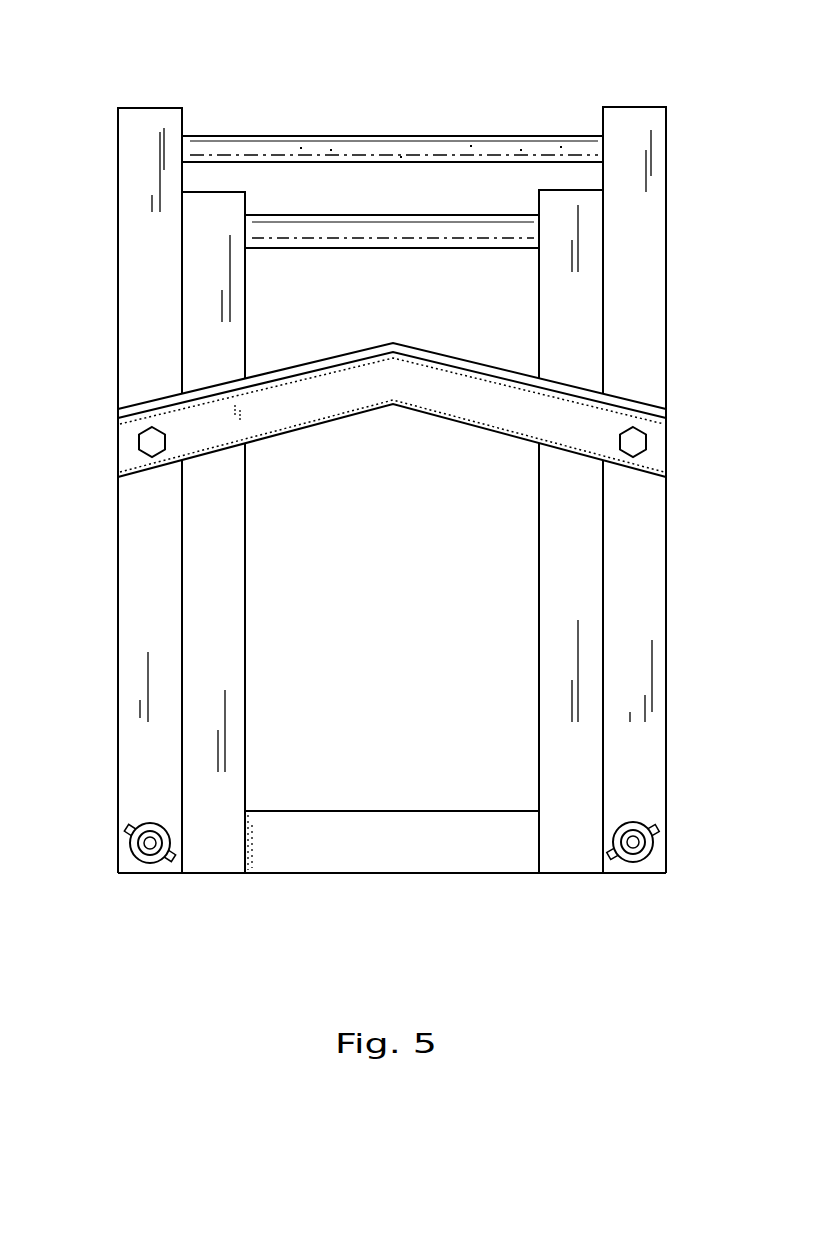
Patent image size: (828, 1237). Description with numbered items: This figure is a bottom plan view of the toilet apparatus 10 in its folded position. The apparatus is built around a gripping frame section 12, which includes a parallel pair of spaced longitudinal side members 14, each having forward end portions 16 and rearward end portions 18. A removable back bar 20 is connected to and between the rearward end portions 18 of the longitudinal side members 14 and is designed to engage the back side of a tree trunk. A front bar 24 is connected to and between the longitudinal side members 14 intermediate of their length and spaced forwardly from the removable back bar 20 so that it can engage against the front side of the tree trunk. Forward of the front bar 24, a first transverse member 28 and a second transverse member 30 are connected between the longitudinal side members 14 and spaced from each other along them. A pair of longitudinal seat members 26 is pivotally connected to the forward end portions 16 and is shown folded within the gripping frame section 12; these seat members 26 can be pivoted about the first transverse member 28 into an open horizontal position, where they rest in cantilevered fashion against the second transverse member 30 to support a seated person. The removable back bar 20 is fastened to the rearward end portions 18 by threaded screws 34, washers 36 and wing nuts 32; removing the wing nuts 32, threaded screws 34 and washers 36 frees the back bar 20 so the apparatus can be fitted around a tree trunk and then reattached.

The toilet apparatus 10 is at (566, 84).
The gripping frame section 12 is at (668, 128).
The longitudinal side members 14 is at (147, 248).
The forward end portions 16 is at (160, 108).
The rearward end portions 18 is at (157, 867).
The removable back bar 20 is at (412, 853).
The front bar 24 is at (318, 400).
The longitudinal seat members 26 is at (212, 567).
The first transverse member 28 is at (360, 232).
The second transverse member 30 is at (357, 143).
The wing nuts 32 is at (130, 835).
The threaded screws 34 is at (133, 850).
The washers 36 is at (142, 860).